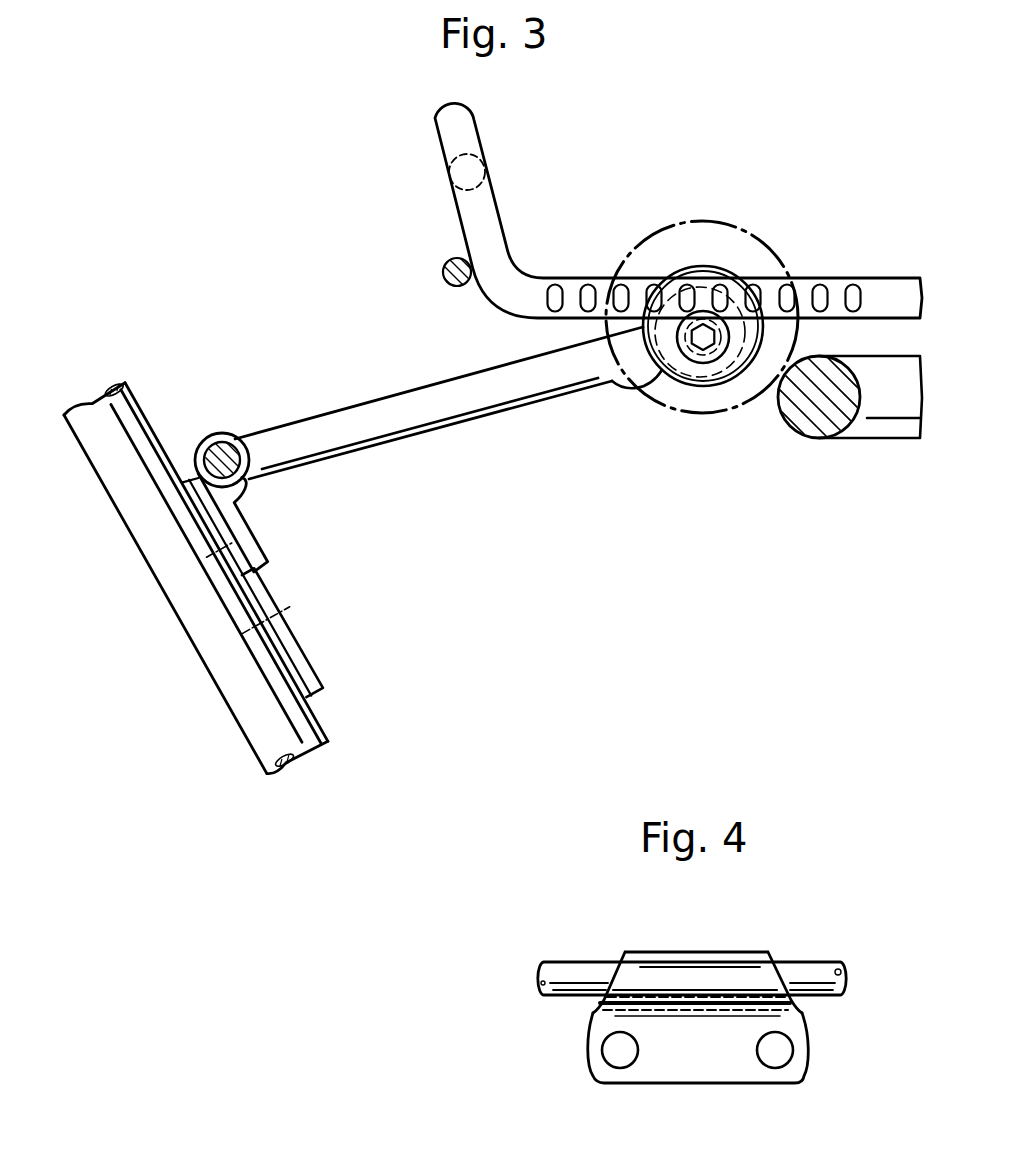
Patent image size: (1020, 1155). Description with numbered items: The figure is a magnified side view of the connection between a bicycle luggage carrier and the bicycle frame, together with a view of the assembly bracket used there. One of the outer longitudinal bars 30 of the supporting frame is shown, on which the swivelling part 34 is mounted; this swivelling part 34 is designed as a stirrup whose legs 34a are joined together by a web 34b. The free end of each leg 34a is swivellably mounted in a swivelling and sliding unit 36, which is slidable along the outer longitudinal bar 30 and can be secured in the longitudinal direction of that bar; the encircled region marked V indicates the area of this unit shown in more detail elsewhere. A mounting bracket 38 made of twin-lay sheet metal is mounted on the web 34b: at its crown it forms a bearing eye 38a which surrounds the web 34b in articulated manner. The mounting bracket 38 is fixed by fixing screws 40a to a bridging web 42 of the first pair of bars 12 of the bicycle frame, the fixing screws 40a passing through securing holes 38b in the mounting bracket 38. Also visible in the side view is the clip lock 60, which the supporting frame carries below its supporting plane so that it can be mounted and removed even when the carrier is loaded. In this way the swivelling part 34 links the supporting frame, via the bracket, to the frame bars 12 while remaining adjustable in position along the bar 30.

In FIG. 3, the first pair of bars 12 is at (233, 685).
In FIG. 3, the outer longitudinal bar 30 is at (878, 296).
In FIG. 3, the swivelling part 34 is at (452, 398).
In FIG. 3, the leg 34a is at (652, 368).
In FIG. 3, the web 34b is at (235, 455).
In FIG. 4, the web 34b is at (593, 972).
In FIG. 3, the swivelling and sliding unit 36 is at (697, 283).
In FIG. 3, the mounting bracket 38 is at (247, 473).
In FIG. 4, the mounting bracket 38 is at (725, 972).
In FIG. 3, the bearing eye 38a is at (223, 443).
In FIG. 4, the bearing eye 38a is at (668, 972).
In FIG. 4, the securing hole 38b is at (765, 1052).
In FIG. 3, the fixing screw 40a is at (228, 548).
In FIG. 3, the bridging web 42 is at (307, 675).
In FIG. 3, the clip lock 60 is at (884, 420).
In FIG. 3, the section view indicator V is at (765, 240).